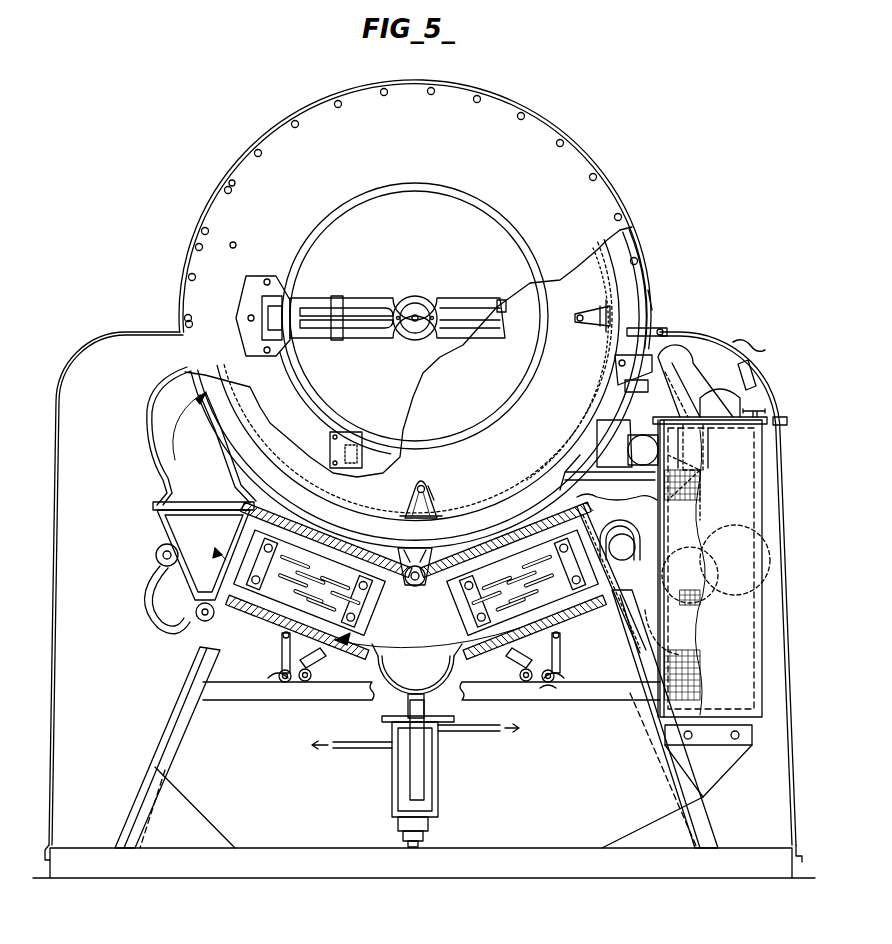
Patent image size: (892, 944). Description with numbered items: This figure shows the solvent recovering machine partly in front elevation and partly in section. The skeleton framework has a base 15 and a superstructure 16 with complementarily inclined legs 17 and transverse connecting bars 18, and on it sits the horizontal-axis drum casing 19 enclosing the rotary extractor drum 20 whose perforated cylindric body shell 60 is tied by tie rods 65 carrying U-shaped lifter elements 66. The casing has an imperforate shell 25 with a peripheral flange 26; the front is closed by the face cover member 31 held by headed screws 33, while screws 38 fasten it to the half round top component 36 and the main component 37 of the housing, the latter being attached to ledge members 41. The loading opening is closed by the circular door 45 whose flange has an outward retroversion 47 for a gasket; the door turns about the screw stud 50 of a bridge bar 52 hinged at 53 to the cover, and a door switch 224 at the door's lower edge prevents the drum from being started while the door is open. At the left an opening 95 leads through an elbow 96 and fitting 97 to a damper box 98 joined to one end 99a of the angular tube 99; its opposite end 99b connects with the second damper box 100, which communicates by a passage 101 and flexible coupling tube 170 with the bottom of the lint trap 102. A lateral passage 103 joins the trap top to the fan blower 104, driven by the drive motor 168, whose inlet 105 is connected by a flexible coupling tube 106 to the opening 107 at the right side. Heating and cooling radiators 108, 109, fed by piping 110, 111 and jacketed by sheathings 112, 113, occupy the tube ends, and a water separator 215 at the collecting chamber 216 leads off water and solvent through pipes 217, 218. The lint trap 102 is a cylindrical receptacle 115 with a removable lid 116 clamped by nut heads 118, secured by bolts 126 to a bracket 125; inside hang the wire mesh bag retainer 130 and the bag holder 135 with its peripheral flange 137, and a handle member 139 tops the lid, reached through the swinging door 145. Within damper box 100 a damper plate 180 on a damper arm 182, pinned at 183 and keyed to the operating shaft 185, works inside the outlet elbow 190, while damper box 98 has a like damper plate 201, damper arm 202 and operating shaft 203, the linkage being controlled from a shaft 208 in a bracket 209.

The base 15 is at (415, 875).
The superstructure 16 is at (160, 705).
The inclined legs 17 is at (175, 753).
The transverse connecting bars 18 is at (238, 695).
The drum casing 19 is at (480, 508).
The rotary extractor drum 20 is at (553, 364).
The imperforate shell 25 is at (648, 282).
The peripheral flange 26 is at (632, 258).
The face cover member 31 is at (437, 90).
The headed screws 33 is at (190, 316).
The half round top component 36 is at (652, 302).
The main component of machine housing 37 is at (53, 468).
The screws 38 is at (213, 205).
The ledge members 41 is at (642, 340).
The circular closure door 45 is at (412, 198).
The outward retroversion 47 is at (528, 250).
The screw stud 50 is at (415, 312).
The bridge bar 52 is at (363, 302).
The hinge connection 53 is at (262, 312).
The cylindric body shell 60 is at (578, 440).
The tie rods 65 is at (575, 318).
The lifter elements 66 is at (600, 310).
The opening 95 is at (222, 398).
The elbow 96 is at (152, 418).
The fitting 97 is at (146, 508).
The damper box 98 is at (200, 516).
The angular tube 99 is at (416, 588).
The end of angular tube 99a is at (318, 580).
The opposite end of angular tube 99b is at (513, 580).
The damper box 100 is at (658, 508).
The passage 101 is at (630, 655).
The lint trap 102 is at (772, 510).
The lateral passage 103 is at (627, 443).
The lateral fan blower 104 is at (685, 358).
The fan inlet 105 is at (682, 374).
The flexible coupling tube 106 is at (640, 364).
The opening 107 is at (625, 385).
The heating radiator 108 is at (263, 649).
The cooling radiator 109 is at (535, 660).
The piping 110 is at (280, 665).
The piping 111 is at (540, 688).
The sheathing 112 is at (330, 665).
The sheathing 113 is at (499, 664).
The cylindrical receptacle 115 is at (748, 492).
The removable lid 116 is at (782, 417).
The nut heads 118 is at (760, 408).
The bracket 125 is at (718, 772).
The bolts 126 is at (734, 736).
The wire mesh bag retainer 130 is at (700, 650).
The bag holder 135 is at (690, 442).
The peripheral flange 137 is at (722, 495).
The handle member 139 is at (720, 401).
The upwardly swinging door 145 is at (756, 329).
The drive motor 168 is at (738, 395).
The flexible coupling tube 170 is at (620, 533).
The damper plate 180 is at (684, 479).
The damper arm 182 is at (700, 575).
The pin 183 is at (690, 566).
The operating shaft 185 is at (570, 652).
The outlet elbow 190 is at (735, 553).
The damper plate 201 is at (162, 546).
The damper arm 202 is at (160, 585).
The operating shaft 203 is at (213, 624).
The shaft 208 is at (394, 544).
The bracket 209 is at (426, 560).
The water separator 215 is at (448, 782).
The collecting chamber 216 is at (432, 678).
The water pipe 217 is at (472, 732).
The solvent pipe 218 is at (372, 740).
The door switch 224 is at (352, 440).